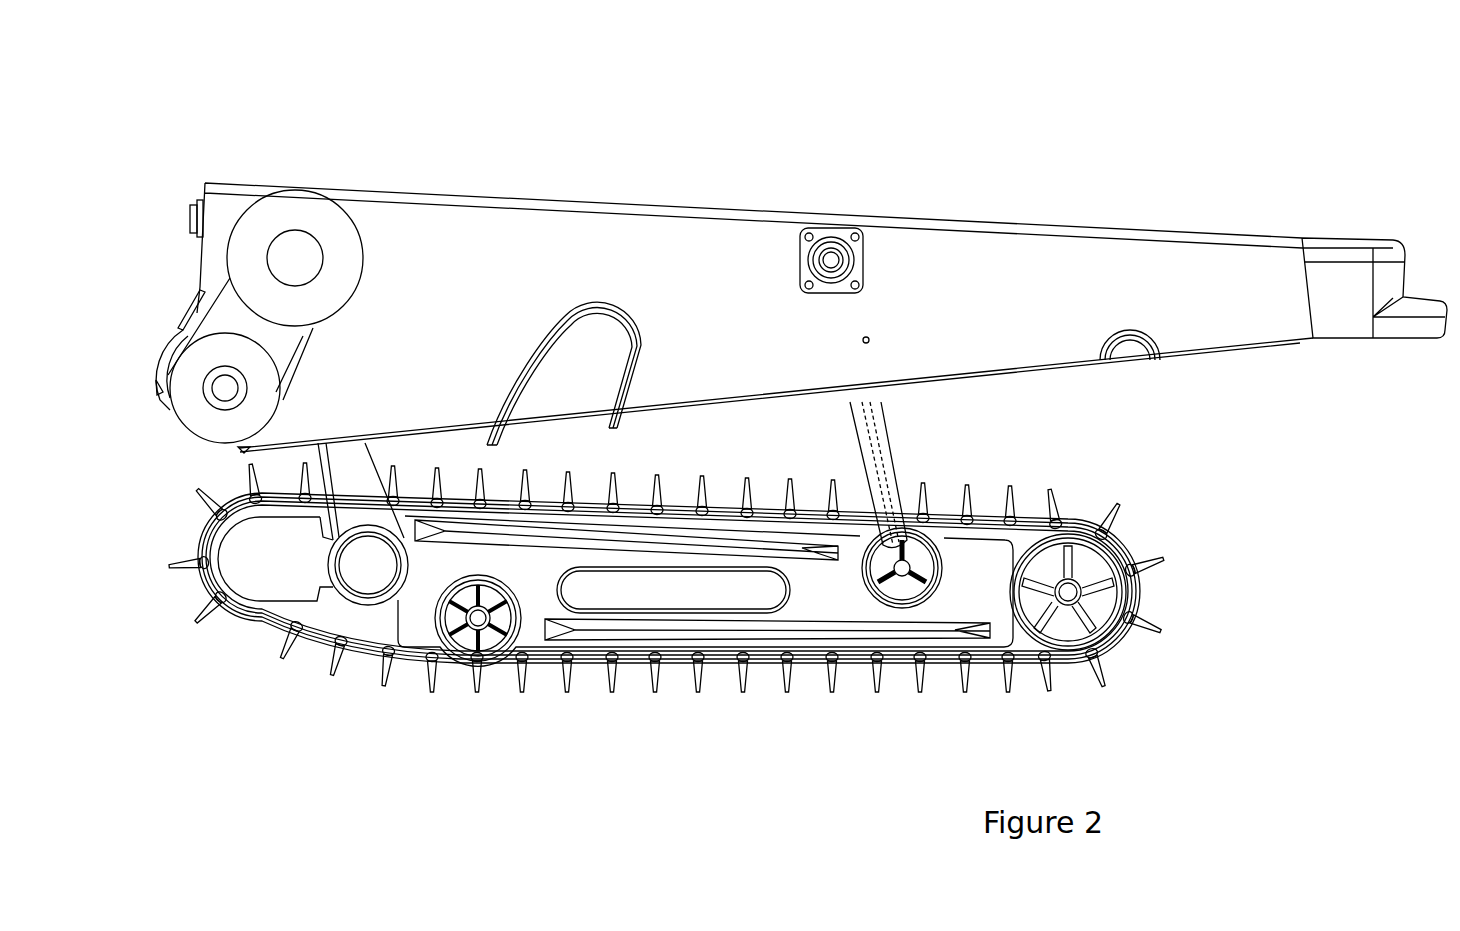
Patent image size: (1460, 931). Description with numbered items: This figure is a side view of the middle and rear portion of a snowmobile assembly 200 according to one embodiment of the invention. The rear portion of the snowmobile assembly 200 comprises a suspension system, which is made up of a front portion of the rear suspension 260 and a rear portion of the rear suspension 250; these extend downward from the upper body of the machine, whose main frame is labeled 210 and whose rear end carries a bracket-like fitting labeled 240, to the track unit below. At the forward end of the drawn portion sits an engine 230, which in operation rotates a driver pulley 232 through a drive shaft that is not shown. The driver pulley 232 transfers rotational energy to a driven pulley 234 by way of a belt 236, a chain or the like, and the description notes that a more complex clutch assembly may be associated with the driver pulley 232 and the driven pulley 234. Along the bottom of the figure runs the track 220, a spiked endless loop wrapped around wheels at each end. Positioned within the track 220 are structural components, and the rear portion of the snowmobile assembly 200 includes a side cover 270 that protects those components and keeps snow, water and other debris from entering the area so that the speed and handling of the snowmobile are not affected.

The snowmobile assembly 200 is at (1059, 53).
The frame body 210 is at (720, 178).
The track 220 is at (832, 673).
The engine 230 is at (172, 330).
The driver pulley 232 is at (262, 410).
The driven pulley 234 is at (335, 245).
The belt 236 is at (313, 346).
The mounting bracket 240 is at (1353, 272).
The rear portion of the rear suspension 250 is at (902, 419).
The front portion of the rear suspension 260 is at (263, 465).
The side cover 270 is at (977, 590).